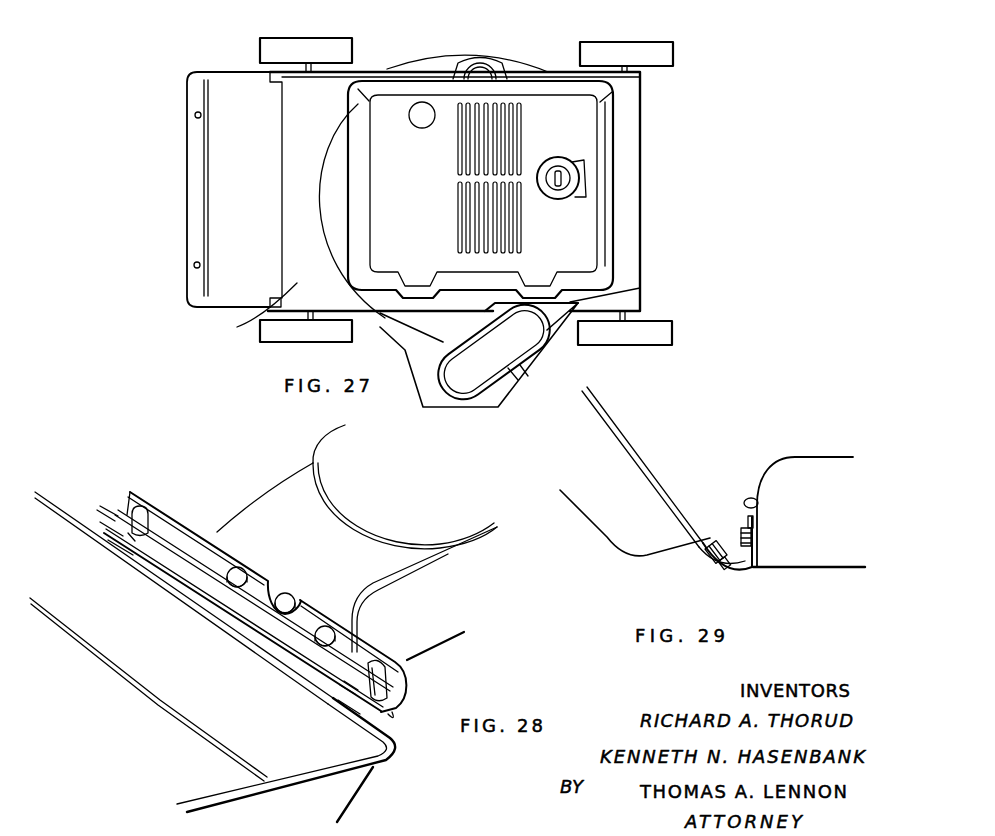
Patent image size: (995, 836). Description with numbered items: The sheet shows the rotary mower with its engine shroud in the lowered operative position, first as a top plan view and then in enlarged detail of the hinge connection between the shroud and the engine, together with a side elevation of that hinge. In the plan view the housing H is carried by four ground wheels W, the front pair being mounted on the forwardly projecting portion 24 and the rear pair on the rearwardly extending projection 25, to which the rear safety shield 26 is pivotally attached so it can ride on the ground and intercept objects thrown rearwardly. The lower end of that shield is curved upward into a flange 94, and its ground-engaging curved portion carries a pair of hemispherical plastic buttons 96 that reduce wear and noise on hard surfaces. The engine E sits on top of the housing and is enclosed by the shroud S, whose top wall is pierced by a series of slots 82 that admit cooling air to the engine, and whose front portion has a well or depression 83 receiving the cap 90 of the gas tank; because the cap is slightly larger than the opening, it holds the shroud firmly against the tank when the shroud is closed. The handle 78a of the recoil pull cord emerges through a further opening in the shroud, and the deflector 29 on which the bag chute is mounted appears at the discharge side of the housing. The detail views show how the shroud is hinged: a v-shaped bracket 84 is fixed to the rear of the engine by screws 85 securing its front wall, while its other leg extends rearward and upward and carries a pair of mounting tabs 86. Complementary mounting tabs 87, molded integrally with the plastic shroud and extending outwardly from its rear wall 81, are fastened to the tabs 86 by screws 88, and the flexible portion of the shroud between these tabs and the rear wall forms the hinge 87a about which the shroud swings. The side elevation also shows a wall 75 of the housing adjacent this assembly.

In FIG. 27, the forwardly projecting portion 24 is at (628, 233).
In FIG. 27, the rearwardly extending projection 25 is at (254, 310).
In FIG. 27, the rear safety shield 26 is at (226, 183).
In FIG. 27, the deflector 29 is at (525, 362).
In FIG. 29, the wall 75 is at (758, 501).
In FIG. 27, the handle of the pull cord 78a is at (418, 118).
In FIG. 27, the rear wall 81 is at (362, 120).
In FIG. 28, the rear wall 81 is at (168, 668).
In FIG. 29, the rear wall 81 is at (656, 556).
In FIG. 27, the slots 82 is at (455, 222).
In FIG. 27, the well or depression 83 is at (573, 198).
In FIG. 28, the v-shaped bracket 84 is at (170, 508).
In FIG. 29, the v-shaped bracket 84 is at (757, 570).
In FIG. 28, the screws 85 is at (240, 566).
In FIG. 29, the screws 85 is at (740, 530).
In FIG. 28, the mounting tabs 86 is at (130, 546).
In FIG. 28, the mounting tabs 87 is at (102, 514).
In FIG. 28, the hinge 87a is at (95, 528).
In FIG. 28, the screws 88 is at (120, 510).
In FIG. 29, the screws 88 is at (710, 566).
In FIG. 27, the cap 90 is at (572, 162).
In FIG. 27, the flange 94 is at (184, 156).
In FIG. 27, the hemispherical plastic buttons 96 is at (194, 116).
In FIG. 27, the shroud S is at (399, 80).
In FIG. 28, the shroud S is at (371, 792).
In FIG. 29, the shroud S is at (576, 514).
In FIG. 27, the housing H is at (477, 52).
In FIG. 27, the ground wheels W is at (675, 47).
In FIG. 28, the engine E is at (270, 480).
In FIG. 29, the engine E is at (806, 455).